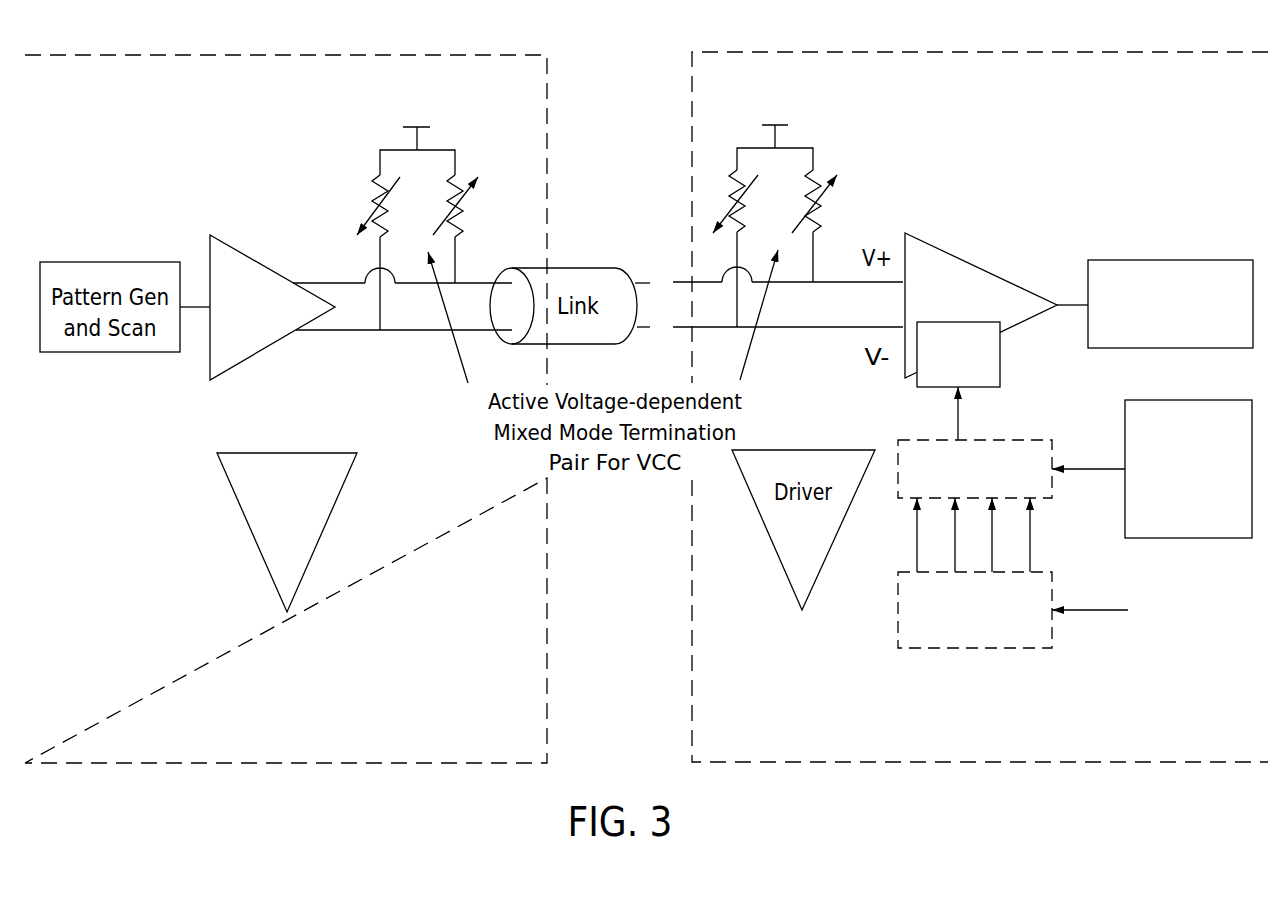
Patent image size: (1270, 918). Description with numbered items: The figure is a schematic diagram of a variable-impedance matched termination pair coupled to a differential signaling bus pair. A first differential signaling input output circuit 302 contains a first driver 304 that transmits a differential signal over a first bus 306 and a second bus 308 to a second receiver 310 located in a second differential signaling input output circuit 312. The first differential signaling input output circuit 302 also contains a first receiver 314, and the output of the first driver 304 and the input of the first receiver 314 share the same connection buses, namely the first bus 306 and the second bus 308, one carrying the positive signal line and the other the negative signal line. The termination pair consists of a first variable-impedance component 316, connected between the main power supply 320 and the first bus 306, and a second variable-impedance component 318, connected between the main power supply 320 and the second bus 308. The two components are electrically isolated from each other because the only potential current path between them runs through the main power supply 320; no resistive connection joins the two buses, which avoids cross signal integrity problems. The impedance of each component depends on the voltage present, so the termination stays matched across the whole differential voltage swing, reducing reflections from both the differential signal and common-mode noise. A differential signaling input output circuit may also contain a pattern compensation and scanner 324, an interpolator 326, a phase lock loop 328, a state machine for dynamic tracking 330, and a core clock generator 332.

The first differential signaling input output circuit 302 is at (265, 745).
The first driver 304 is at (232, 331).
The first bus 306 is at (635, 281).
The second bus 308 is at (638, 329).
The second receiver 310 is at (924, 305).
The second differential signaling input output circuit 312 is at (959, 744).
The first receiver 314 is at (268, 524).
The first variable-impedance component 316 is at (375, 182).
The second variable-impedance component 318 is at (460, 178).
The main power supply 320 is at (568, 235).
The pattern compensation and scanner 324 is at (1165, 260).
The interpolator 326 is at (990, 440).
The phase lock loop 328 is at (1040, 572).
The state machine for dynamic tracking 330 is at (1180, 400).
The core clock generator 332 is at (1195, 593).